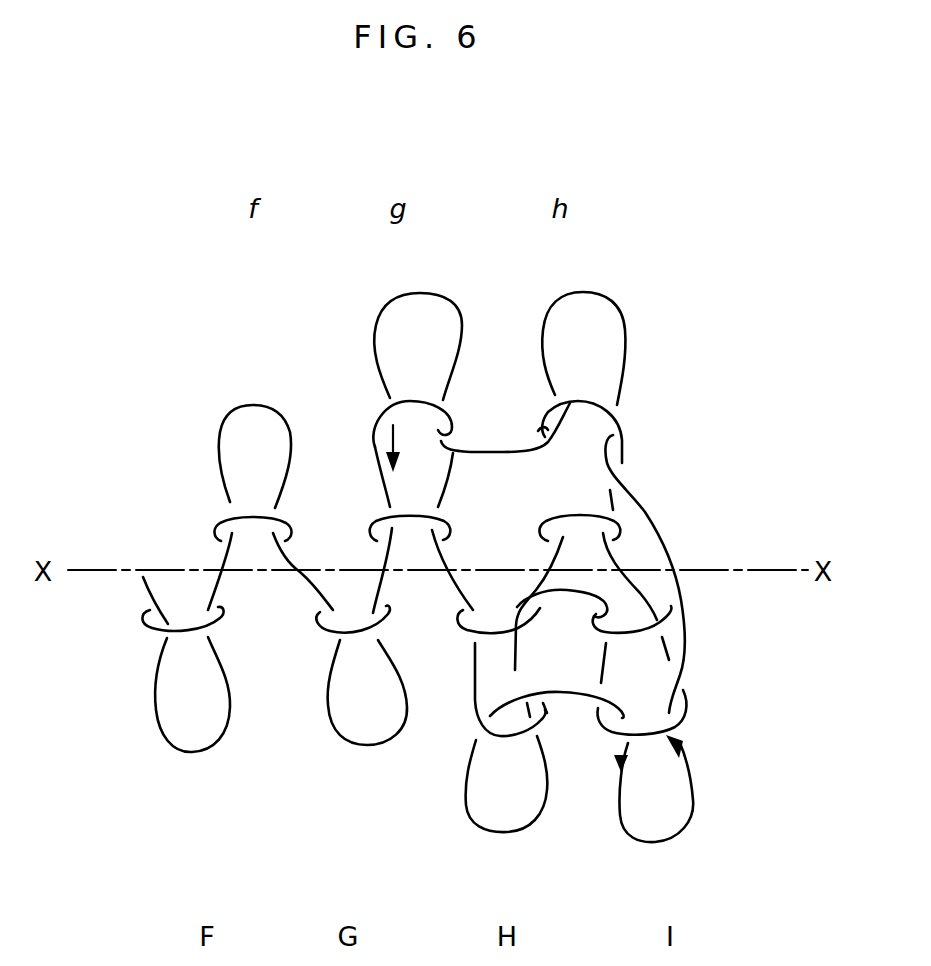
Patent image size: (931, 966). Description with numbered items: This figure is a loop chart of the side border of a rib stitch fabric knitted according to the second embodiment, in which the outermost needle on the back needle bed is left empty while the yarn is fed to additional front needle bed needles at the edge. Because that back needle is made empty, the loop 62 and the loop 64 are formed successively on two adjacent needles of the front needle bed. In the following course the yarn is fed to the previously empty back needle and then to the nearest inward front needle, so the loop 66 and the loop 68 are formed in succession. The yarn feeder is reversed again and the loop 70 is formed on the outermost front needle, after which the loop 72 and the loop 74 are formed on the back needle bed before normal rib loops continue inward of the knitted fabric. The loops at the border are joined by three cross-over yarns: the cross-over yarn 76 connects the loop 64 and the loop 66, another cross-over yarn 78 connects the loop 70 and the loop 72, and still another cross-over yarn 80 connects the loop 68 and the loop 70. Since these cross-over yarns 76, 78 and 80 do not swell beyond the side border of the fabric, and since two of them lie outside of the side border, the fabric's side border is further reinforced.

The loop 62 is at (473, 703).
The loop 64 is at (690, 710).
The loop 66 is at (625, 450).
The loop 68 is at (487, 827).
The loop 70 is at (687, 830).
The loop 72 is at (613, 302).
The loop 74 is at (450, 300).
The cross-over yarn 76 is at (613, 560).
The cross-over yarn 78 is at (687, 627).
The cross-over yarn 80 is at (580, 700).